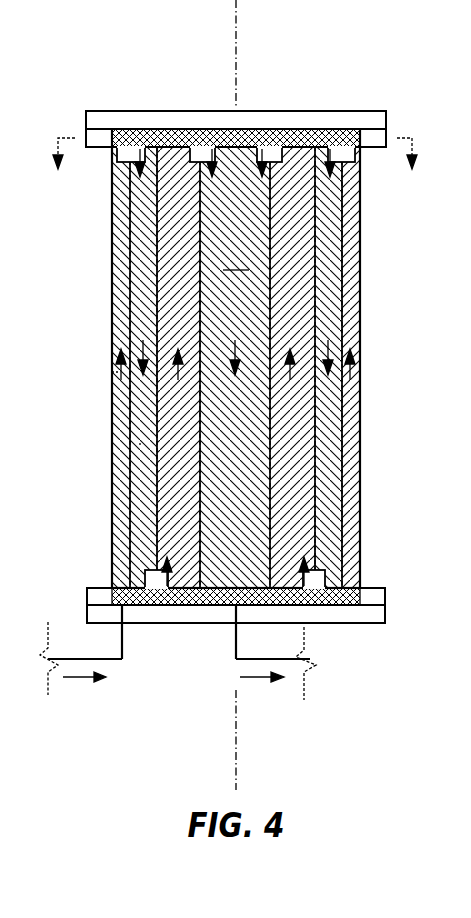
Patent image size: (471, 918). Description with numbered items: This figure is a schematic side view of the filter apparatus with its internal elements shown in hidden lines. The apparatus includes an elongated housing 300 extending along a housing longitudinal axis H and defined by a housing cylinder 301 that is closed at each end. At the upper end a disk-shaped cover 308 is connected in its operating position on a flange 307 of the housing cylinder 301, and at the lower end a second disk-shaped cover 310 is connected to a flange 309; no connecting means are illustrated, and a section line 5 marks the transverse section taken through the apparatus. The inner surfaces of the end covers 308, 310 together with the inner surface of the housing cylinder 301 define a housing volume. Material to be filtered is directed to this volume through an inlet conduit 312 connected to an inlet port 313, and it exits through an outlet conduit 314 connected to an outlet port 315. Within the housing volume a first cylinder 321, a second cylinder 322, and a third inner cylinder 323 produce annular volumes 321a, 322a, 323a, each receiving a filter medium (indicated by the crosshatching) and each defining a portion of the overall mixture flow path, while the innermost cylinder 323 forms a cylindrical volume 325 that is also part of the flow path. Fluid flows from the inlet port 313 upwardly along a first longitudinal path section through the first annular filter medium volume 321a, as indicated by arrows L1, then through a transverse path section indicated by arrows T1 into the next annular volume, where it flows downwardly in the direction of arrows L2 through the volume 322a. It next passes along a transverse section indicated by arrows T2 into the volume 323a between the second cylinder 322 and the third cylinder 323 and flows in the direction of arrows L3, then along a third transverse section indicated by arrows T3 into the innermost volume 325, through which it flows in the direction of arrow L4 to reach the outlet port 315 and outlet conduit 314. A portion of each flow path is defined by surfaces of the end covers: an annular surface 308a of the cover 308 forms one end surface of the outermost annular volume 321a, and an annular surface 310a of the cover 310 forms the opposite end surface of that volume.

The housing 300 is at (403, 310).
The housing cylinder 301 is at (112, 290).
The flange 307 is at (387, 140).
The disk-shaped cover 308 is at (387, 112).
The annular surface 308a is at (121, 146).
The flange 309 is at (386, 590).
The second disk-shaped cover 310 is at (386, 616).
The annular surface 310a is at (113, 609).
The inlet conduit 312 is at (103, 661).
The inlet port 313 is at (123, 612).
The outlet conduit 314 is at (288, 662).
The outlet port 315 is at (233, 610).
The first cylinder 321 is at (112, 212).
The first annular filter medium volume 321a is at (112, 236).
The second cylinder 322 is at (153, 498).
The annular filter medium receiving volume 322a is at (140, 443).
The third inner cylinder 323 is at (272, 438).
The filter medium receiving volume 323a is at (292, 485).
The innermost filter medium receiving volume 325 is at (236, 262).
The housing longitudinal axis H is at (238, 33).
The section line 5 is at (235, 167).
The arrows T1 is at (347, 142).
The arrows T2 is at (325, 607).
The arrows T3 is at (279, 145).
The arrows L1 is at (360, 370).
The arrows L2 is at (378, 340).
The arrows L3 is at (296, 365).
The arrow L4 is at (237, 365).